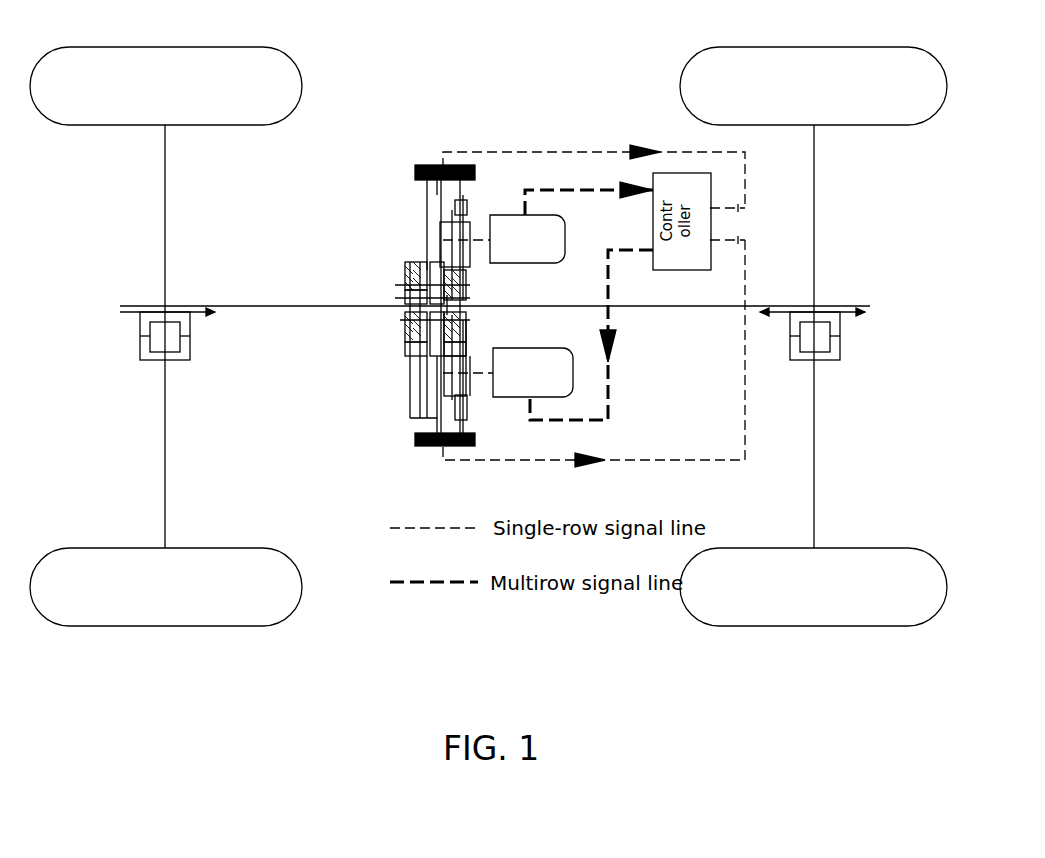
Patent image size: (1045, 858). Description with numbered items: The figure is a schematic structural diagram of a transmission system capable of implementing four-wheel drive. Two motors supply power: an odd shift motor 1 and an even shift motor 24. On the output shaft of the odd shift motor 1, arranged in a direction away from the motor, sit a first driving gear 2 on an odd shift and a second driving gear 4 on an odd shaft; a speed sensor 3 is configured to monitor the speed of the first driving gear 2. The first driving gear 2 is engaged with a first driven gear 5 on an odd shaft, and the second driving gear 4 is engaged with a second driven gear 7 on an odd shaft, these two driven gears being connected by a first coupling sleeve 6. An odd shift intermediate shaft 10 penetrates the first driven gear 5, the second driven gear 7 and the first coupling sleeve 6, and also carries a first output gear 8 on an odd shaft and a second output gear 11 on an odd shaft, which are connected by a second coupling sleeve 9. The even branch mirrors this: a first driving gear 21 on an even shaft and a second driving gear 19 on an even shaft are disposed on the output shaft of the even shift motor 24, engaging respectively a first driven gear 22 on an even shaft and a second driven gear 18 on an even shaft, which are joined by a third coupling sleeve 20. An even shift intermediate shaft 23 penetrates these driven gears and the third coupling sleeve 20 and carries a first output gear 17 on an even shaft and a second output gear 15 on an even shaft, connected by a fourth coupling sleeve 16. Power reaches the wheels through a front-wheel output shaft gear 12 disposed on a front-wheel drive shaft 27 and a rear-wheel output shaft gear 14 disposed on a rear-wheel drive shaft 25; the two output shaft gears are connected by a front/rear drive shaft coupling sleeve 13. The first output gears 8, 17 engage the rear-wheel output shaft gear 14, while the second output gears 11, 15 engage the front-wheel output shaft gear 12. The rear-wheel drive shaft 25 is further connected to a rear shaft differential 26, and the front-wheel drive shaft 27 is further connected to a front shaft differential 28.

The odd shift motor 1 is at (561, 175).
The first driving gear on an odd shift 2 is at (501, 201).
The speed sensor 3 is at (479, 194).
The second driving gear on an odd shaft 4 is at (448, 184).
The first driven gear on an odd shaft 5 is at (395, 189).
The first coupling sleeve 6 is at (392, 210).
The second driven gear on an odd shaft 7 is at (394, 224).
The first output gear on an odd shaft 8 is at (407, 234).
The second coupling sleeve 9 is at (405, 251).
The odd shift intermediate shaft 10 is at (386, 286).
The second output gear on an odd shaft 11 is at (386, 307).
The front-wheel output shaft gear 12 is at (394, 334).
The front/rear drive shaft coupling sleeve 13 is at (405, 336).
The rear-wheel output shaft gear 14 is at (405, 354).
The second output gear on an even shaft 15 is at (405, 370).
The fourth coupling sleeve 16 is at (391, 387).
The first output gear on an even shaft 17 is at (394, 403).
The second driven gear on an even shaft 18 is at (397, 381).
The second driving gear on an even shaft 19 is at (400, 395).
The third coupling sleeve 20 is at (445, 468).
The first driving gear on an even shaft 21 is at (473, 412).
The first driven gear on an even shaft 22 is at (512, 430).
The even shift intermediate shaft 23 is at (534, 412).
The even shift motor 24 is at (580, 426).
The rear-wheel drive shaft 25 is at (808, 282).
The rear shaft differential 26 is at (843, 260).
The front-wheel drive shaft 27 is at (198, 260).
The front shaft differential 28 is at (173, 282).